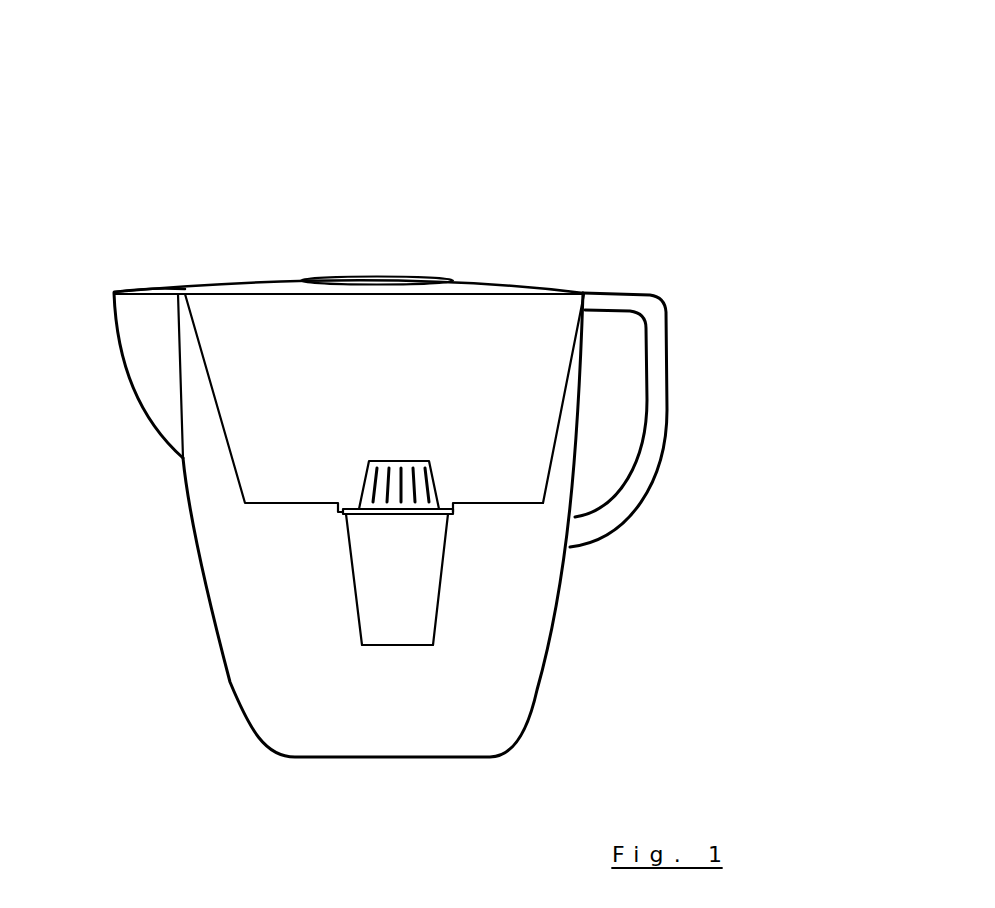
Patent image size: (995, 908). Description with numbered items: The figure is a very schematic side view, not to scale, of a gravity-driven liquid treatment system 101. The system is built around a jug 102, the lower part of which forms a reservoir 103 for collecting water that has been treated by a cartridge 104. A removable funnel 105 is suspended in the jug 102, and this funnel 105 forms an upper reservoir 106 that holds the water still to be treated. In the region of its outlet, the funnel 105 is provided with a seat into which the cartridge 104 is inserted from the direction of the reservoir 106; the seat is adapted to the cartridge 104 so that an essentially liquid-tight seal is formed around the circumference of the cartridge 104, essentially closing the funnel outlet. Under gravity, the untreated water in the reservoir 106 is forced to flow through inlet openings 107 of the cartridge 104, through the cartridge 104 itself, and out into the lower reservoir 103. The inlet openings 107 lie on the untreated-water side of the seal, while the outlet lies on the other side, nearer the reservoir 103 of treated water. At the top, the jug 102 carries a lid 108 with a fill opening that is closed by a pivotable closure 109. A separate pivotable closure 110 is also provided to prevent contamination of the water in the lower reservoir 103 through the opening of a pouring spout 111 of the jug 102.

The liquid treatment system 101 is at (585, 45).
The jug 102 is at (692, 402).
The reservoir 103 is at (388, 731).
The cartridge 104 is at (446, 478).
The funnel 105 is at (562, 412).
The reservoir 106 is at (355, 445).
The inlet openings 107 is at (399, 466).
The lid 108 is at (490, 286).
The pivotable closure 109 is at (365, 277).
The lid spout portion 110 is at (163, 288).
The spout 111 is at (145, 350).